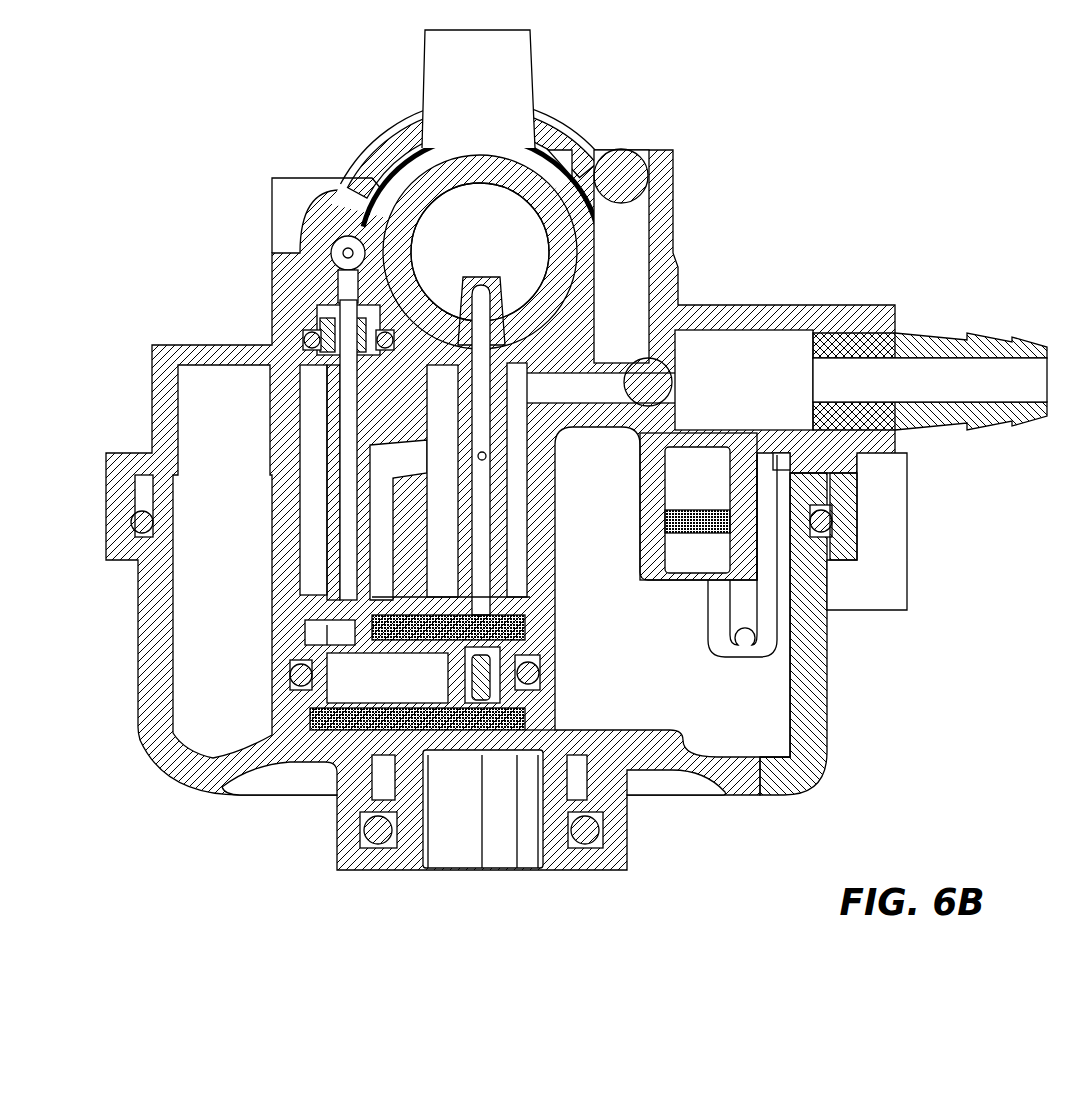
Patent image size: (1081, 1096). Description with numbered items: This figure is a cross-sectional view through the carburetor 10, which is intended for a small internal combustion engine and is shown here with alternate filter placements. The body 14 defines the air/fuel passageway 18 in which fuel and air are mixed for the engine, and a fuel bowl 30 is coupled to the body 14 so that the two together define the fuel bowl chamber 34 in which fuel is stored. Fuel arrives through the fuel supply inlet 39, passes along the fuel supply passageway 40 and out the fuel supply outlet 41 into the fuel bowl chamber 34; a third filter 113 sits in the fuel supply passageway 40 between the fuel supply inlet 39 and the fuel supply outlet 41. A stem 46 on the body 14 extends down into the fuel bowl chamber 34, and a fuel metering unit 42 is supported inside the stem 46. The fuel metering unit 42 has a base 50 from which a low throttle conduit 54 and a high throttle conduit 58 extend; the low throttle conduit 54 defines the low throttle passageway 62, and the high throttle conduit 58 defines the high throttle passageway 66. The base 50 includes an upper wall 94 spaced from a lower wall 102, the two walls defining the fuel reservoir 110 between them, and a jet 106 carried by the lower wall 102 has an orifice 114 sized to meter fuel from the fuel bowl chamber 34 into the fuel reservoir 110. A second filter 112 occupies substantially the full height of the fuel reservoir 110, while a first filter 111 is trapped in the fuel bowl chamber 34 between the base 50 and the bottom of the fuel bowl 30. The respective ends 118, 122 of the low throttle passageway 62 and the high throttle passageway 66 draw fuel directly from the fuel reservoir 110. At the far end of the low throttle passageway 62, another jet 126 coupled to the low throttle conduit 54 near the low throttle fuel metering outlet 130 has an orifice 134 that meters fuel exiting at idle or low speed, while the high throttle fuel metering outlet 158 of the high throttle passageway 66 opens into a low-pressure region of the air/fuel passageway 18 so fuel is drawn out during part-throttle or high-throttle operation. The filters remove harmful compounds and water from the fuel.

The carburetor 10 is at (818, 170).
The body 14 is at (682, 268).
The air/fuel passageway 18 is at (477, 208).
The fuel bowl 30 is at (165, 773).
The fuel bowl chamber 34 is at (200, 710).
The fuel supply inlet 39 is at (882, 378).
The fuel supply passageway 40 is at (722, 560).
The fuel supply outlet 41 is at (707, 575).
The fuel metering unit 42 is at (316, 554).
The stem 46 is at (548, 523).
The base 50 is at (523, 718).
The low throttle conduit 54 is at (325, 496).
The high throttle conduit 58 is at (498, 561).
The low throttle passageway 62 is at (348, 522).
The high throttle passageway 66 is at (478, 526).
The upper wall 94 is at (427, 600).
The lower wall 102 is at (300, 657).
The jet 106 is at (472, 700).
The fuel reservoir 110 is at (316, 631).
The first filter 111 is at (443, 750).
The second filter 112 is at (337, 795).
The third filter 113 is at (732, 522).
The orifice 114 is at (485, 662).
The end of low throttle passageway 118 is at (346, 604).
The end of high throttle passageway 122 is at (484, 603).
The jet 126 is at (330, 332).
The low throttle fuel metering outlet 130 is at (335, 297).
The orifice 134 is at (335, 383).
The high throttle fuel metering outlet 158 is at (488, 272).